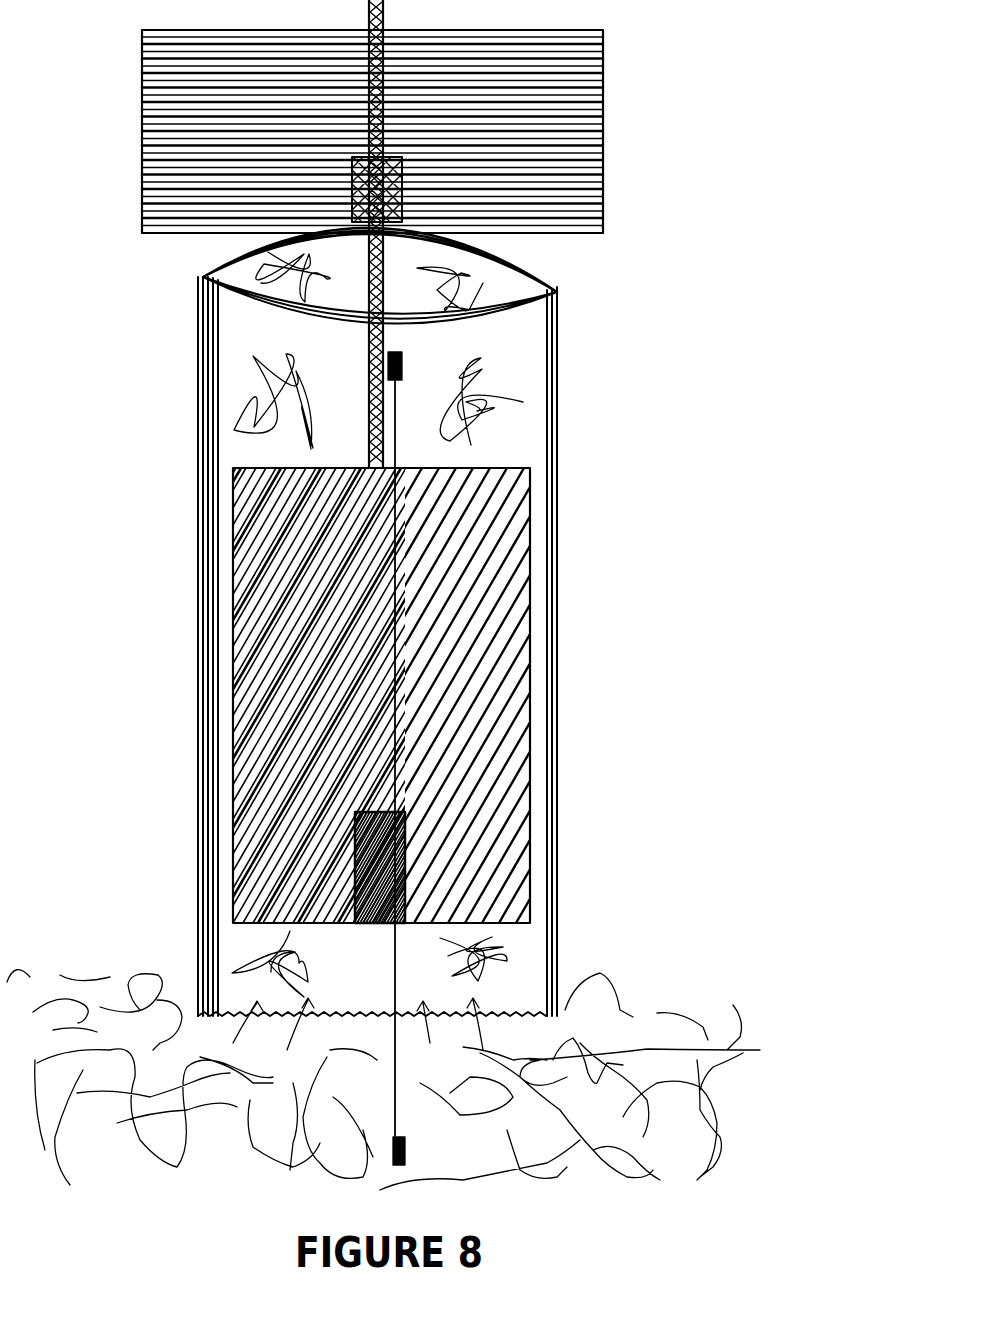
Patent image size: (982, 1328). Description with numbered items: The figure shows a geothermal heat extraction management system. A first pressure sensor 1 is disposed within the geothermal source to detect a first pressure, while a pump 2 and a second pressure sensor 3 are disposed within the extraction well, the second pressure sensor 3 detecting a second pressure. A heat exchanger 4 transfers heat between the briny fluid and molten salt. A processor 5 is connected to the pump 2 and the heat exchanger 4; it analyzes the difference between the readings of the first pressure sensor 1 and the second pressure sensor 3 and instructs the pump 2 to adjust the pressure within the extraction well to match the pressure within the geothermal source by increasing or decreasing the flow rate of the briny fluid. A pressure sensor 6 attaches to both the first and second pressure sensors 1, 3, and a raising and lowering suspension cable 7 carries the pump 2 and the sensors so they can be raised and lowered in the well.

The first pressure sensor 1 is at (405, 1150).
The pump 2 is at (530, 678).
The second pressure sensor 3 is at (402, 357).
The heat exchanger 4 is at (603, 108).
The processor 5 is at (352, 176).
The pressure sensor 6 is at (405, 852).
The raising and lowering suspension cable 7 is at (355, 358).